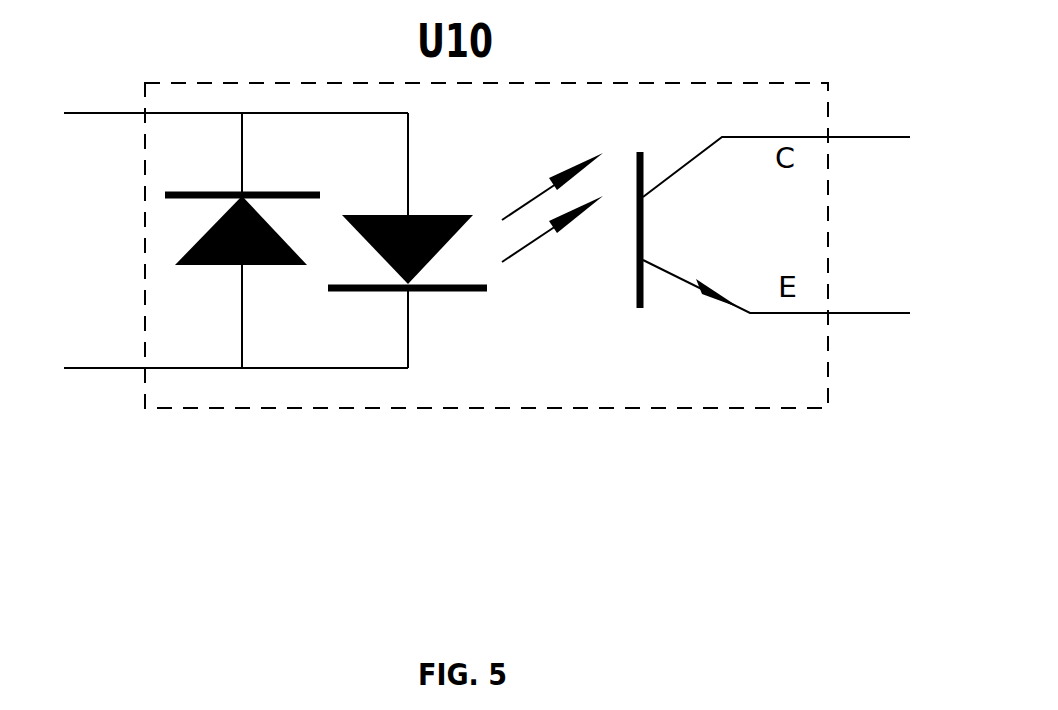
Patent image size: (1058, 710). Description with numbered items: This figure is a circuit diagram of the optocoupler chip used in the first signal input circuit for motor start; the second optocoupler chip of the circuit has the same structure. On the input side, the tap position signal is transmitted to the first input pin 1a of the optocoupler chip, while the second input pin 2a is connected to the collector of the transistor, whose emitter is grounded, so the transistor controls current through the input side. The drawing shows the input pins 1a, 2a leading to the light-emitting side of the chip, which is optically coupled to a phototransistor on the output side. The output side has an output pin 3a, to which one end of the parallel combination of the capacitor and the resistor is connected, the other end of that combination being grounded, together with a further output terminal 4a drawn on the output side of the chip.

The first input pin 1a is at (153, 89).
The second input pin 2a is at (153, 343).
The output pin 3a is at (776, 286).
The collector output terminal of optocoupler U10 4a is at (776, 145).